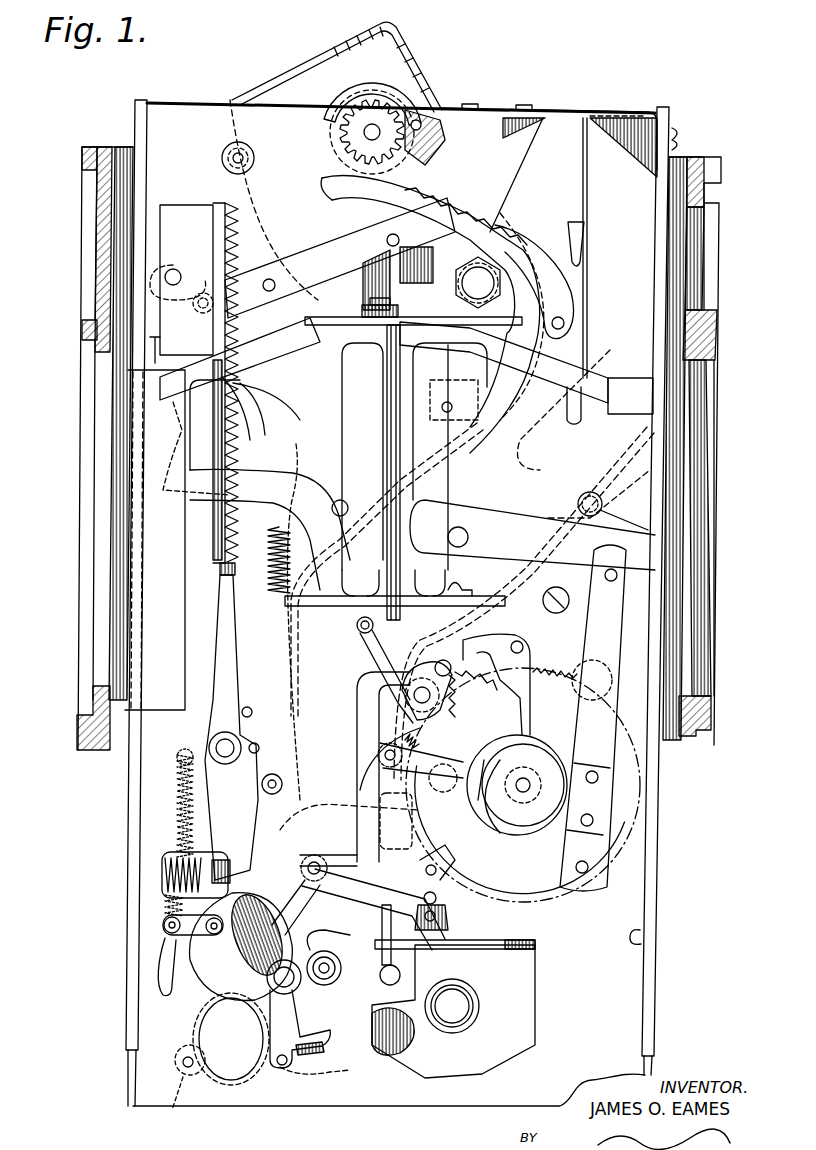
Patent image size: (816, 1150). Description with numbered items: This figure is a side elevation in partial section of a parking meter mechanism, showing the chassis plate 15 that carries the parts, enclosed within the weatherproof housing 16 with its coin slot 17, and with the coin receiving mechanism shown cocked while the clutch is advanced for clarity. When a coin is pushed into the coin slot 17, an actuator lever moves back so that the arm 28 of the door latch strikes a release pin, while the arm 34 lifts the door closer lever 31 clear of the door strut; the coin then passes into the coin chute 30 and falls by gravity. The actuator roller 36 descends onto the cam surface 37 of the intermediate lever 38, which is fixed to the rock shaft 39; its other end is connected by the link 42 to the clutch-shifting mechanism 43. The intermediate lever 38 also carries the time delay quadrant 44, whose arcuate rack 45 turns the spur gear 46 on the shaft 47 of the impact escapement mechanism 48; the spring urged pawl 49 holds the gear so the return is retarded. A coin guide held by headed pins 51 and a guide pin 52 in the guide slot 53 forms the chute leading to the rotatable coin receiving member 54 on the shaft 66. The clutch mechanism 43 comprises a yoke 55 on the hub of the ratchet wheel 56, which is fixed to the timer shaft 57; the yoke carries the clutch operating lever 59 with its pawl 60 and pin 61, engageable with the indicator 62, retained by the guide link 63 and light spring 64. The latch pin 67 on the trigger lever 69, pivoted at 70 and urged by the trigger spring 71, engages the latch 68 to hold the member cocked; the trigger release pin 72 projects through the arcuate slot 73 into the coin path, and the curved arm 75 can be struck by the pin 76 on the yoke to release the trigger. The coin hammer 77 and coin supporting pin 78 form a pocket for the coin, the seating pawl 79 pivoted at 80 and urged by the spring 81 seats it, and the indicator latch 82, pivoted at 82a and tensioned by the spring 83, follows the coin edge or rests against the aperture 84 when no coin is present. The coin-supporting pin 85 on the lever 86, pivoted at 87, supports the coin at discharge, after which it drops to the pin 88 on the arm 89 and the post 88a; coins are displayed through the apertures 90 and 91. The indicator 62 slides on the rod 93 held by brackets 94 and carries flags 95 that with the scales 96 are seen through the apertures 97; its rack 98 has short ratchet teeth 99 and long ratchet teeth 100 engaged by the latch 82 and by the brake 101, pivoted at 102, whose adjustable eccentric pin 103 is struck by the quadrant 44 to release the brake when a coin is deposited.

The chassis plate 15 is at (178, 118).
The housing 16 is at (82, 333).
The coin slot 17 is at (696, 266).
The arm 28 is at (360, 216).
The coin chute 30 is at (520, 470).
The door closer lever 31 is at (508, 218).
The arm 34 is at (385, 270).
The roller 36 is at (240, 411).
The cam surface 37 is at (193, 438).
The intermediate lever 38 is at (482, 522).
The rock shaft 39 is at (300, 612).
The link 42 is at (590, 642).
The clutch-shifting mechanism 43 is at (512, 855).
The time delay quadrant 44 is at (553, 292).
The arcuate rack 45 is at (425, 190).
The spur gear 46 is at (350, 143).
The shaft 47 is at (364, 133).
The impact escapement mechanism 48 is at (410, 65).
The spring urged pawl 49 is at (390, 105).
The headed pins 51 is at (447, 402).
The guide pin 52 is at (596, 497).
The guide slot 53 is at (626, 520).
The coin receiving member 54 is at (400, 1040).
The yoke 55 is at (533, 678).
The ratchet wheel 56 is at (520, 896).
The shaft 57 is at (520, 788).
The clutch operating lever 59 is at (375, 645).
The pawl 60 is at (386, 750).
The pin 61 is at (356, 626).
The indicator 62 is at (350, 602).
The guide link 63 is at (490, 745).
The light spring 64 is at (445, 712).
The shaft 66 is at (330, 978).
The latch pin 67 is at (437, 899).
The latch 68 is at (447, 924).
The trigger lever 69 is at (360, 876).
The pivot 70 is at (427, 866).
The trigger spring 71 is at (453, 1011).
The trigger release pin 72 is at (314, 860).
The arcuate slot 73 is at (388, 985).
The curved arm 75 is at (357, 800).
The pin 76 is at (516, 641).
The coin hammer 77 is at (426, 882).
The coin supporting pin 78 is at (335, 942).
The seating pawl 79 is at (344, 869).
The pivot 80 is at (282, 780).
The spring 81 is at (170, 878).
The indicator latch 82 is at (222, 636).
The pivot 82a is at (222, 745).
The spring 83 is at (270, 557).
The aperture 84 is at (200, 868).
The coin-supporting pin 85 is at (175, 936).
The lever 86 is at (203, 993).
The pivot 87 is at (292, 984).
The pin 88 is at (283, 1072).
The post 88a is at (184, 1086).
The arm 89 is at (290, 1023).
The aperture 90 is at (241, 944).
The aperture 91 is at (231, 1039).
The rod 93 is at (387, 405).
The brackets 94 is at (362, 310).
The flags 95 is at (142, 517).
The scales 96 is at (128, 995).
The apertures 97 is at (100, 578).
The rack 98 is at (228, 388).
The short ratchet teeth 99 is at (233, 560).
The long ratchet teeth 100 is at (242, 466).
The brake 101 is at (252, 222).
The pivot 102 is at (173, 268).
The adjustable eccentric pin 103 is at (222, 158).